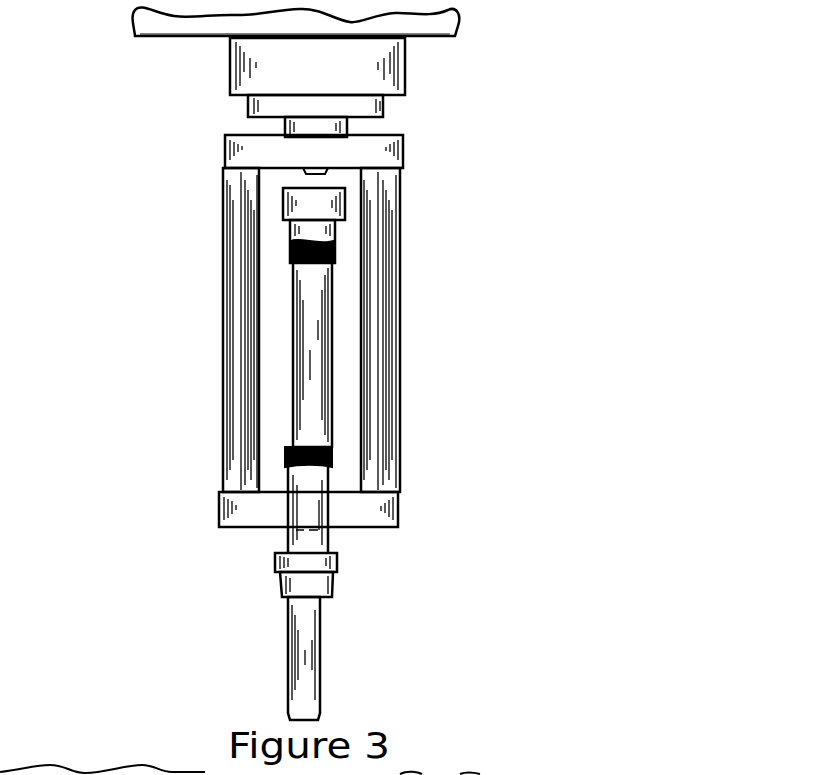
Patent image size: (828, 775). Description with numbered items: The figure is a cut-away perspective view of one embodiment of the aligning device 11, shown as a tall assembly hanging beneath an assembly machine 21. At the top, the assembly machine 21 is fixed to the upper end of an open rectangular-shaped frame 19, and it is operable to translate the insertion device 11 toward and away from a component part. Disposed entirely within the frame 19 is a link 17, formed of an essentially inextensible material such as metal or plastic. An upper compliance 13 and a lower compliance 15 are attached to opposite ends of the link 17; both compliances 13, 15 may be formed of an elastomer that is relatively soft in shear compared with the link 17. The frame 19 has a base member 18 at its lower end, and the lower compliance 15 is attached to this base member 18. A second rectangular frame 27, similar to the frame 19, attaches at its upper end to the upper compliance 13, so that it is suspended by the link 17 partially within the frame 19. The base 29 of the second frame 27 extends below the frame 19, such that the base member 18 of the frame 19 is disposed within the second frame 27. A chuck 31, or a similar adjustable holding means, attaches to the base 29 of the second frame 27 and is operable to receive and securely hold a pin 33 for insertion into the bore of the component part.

The aligning device 11 is at (133, 188).
The upper compliance 13 is at (335, 256).
The lower compliance 15 is at (332, 460).
The link 17 is at (330, 348).
The base member 18 is at (218, 507).
The frame 19 is at (212, 322).
The assembly machine 21 is at (405, 66).
The second rectangular frame 27 is at (368, 200).
The base 29 is at (287, 535).
The chuck 31 is at (337, 558).
The pin 33 is at (320, 668).